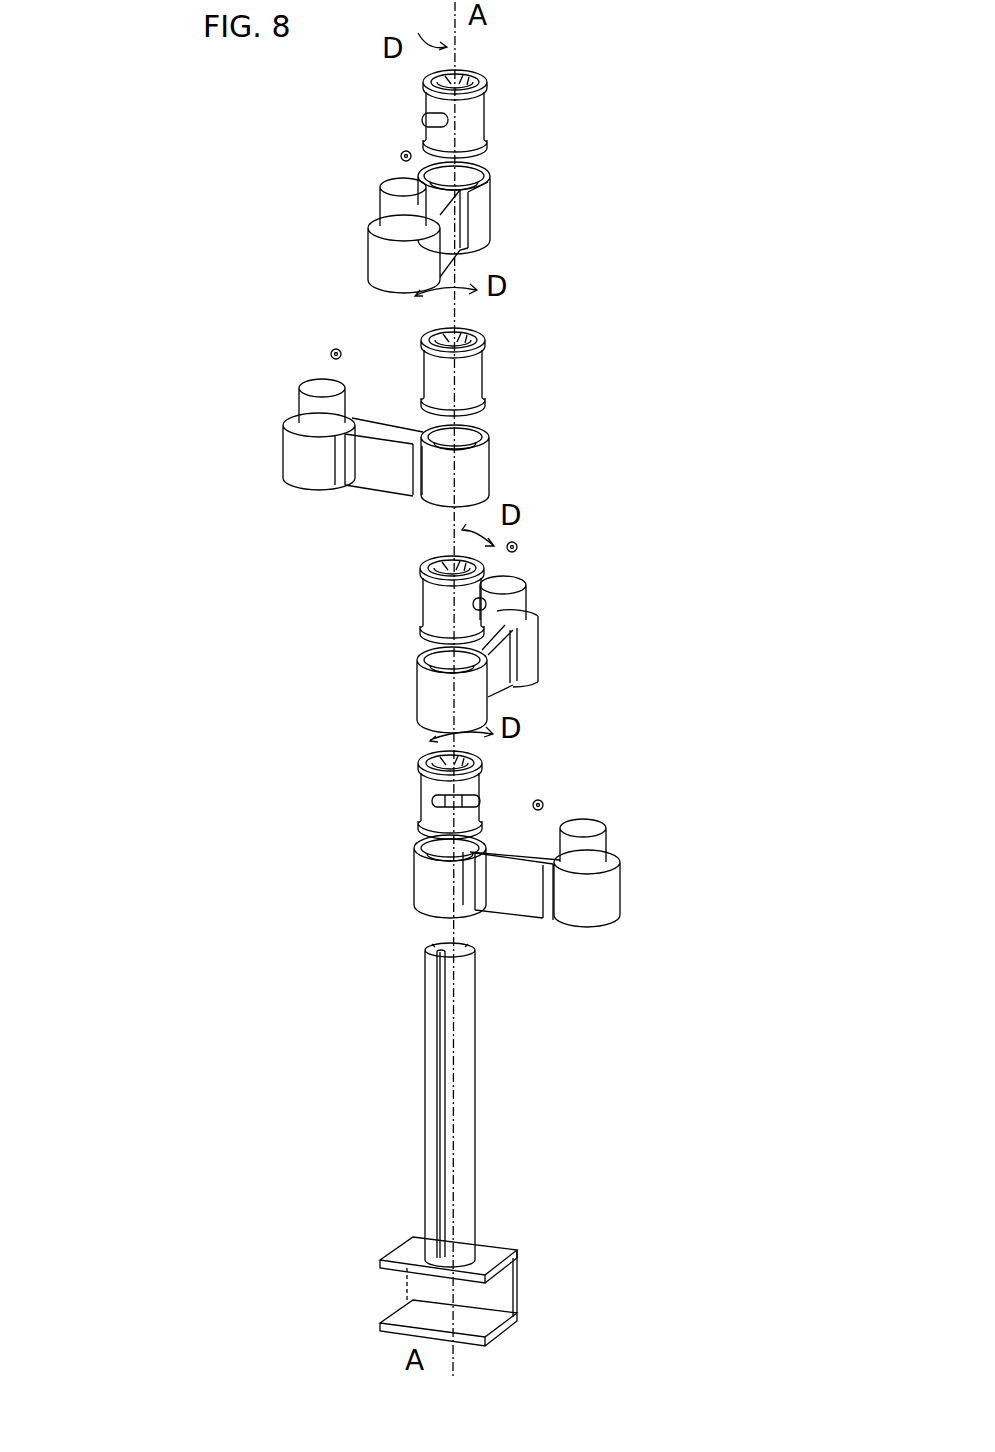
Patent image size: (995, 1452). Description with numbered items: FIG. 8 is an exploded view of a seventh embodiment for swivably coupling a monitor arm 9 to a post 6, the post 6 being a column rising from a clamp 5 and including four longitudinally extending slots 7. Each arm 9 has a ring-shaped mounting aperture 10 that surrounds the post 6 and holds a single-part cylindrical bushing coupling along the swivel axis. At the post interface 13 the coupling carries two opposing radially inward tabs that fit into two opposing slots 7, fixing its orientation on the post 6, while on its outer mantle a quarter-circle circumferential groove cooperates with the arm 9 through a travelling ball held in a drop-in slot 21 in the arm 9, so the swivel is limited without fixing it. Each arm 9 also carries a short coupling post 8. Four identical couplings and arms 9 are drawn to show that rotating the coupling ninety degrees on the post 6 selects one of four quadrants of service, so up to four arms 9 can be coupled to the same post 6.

The clamp 5 is at (480, 1268).
The post 6 is at (456, 1210).
The longitudinally extending slot 7 is at (445, 1175).
The post embodied as coupling post 8 is at (392, 200).
The monitor arm 9 is at (476, 217).
The mounting aperture of monitor arm 10 is at (465, 173).
The post interface of coupling 13 is at (470, 85).
The slot of traveler 21 is at (488, 182).